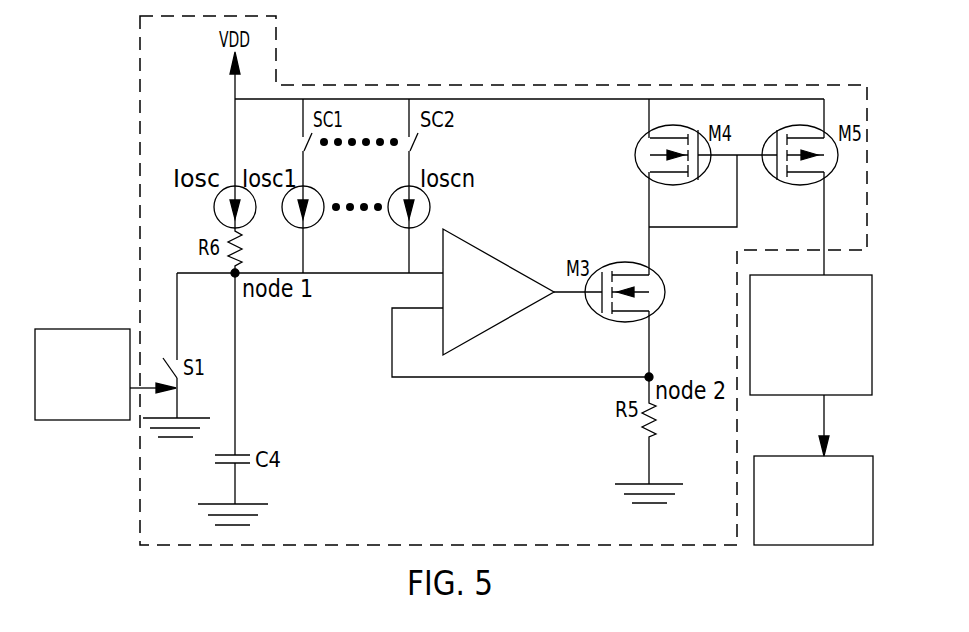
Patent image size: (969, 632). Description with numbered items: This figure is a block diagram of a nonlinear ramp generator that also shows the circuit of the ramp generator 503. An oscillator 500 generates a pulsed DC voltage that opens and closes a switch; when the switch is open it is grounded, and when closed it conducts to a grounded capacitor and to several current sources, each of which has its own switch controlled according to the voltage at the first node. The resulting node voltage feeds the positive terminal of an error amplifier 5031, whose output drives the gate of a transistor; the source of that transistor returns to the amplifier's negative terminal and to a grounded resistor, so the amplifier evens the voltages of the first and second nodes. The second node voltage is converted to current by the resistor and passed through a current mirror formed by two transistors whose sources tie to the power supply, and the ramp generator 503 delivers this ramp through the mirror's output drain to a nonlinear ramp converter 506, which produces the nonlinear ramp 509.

The oscillator 500 is at (101, 414).
The ramp generator 503 is at (508, 85).
The error amplifier 5031 is at (505, 262).
The nonlinear ramp converter 506 is at (829, 390).
The nonlinear ramp 509 is at (833, 537).